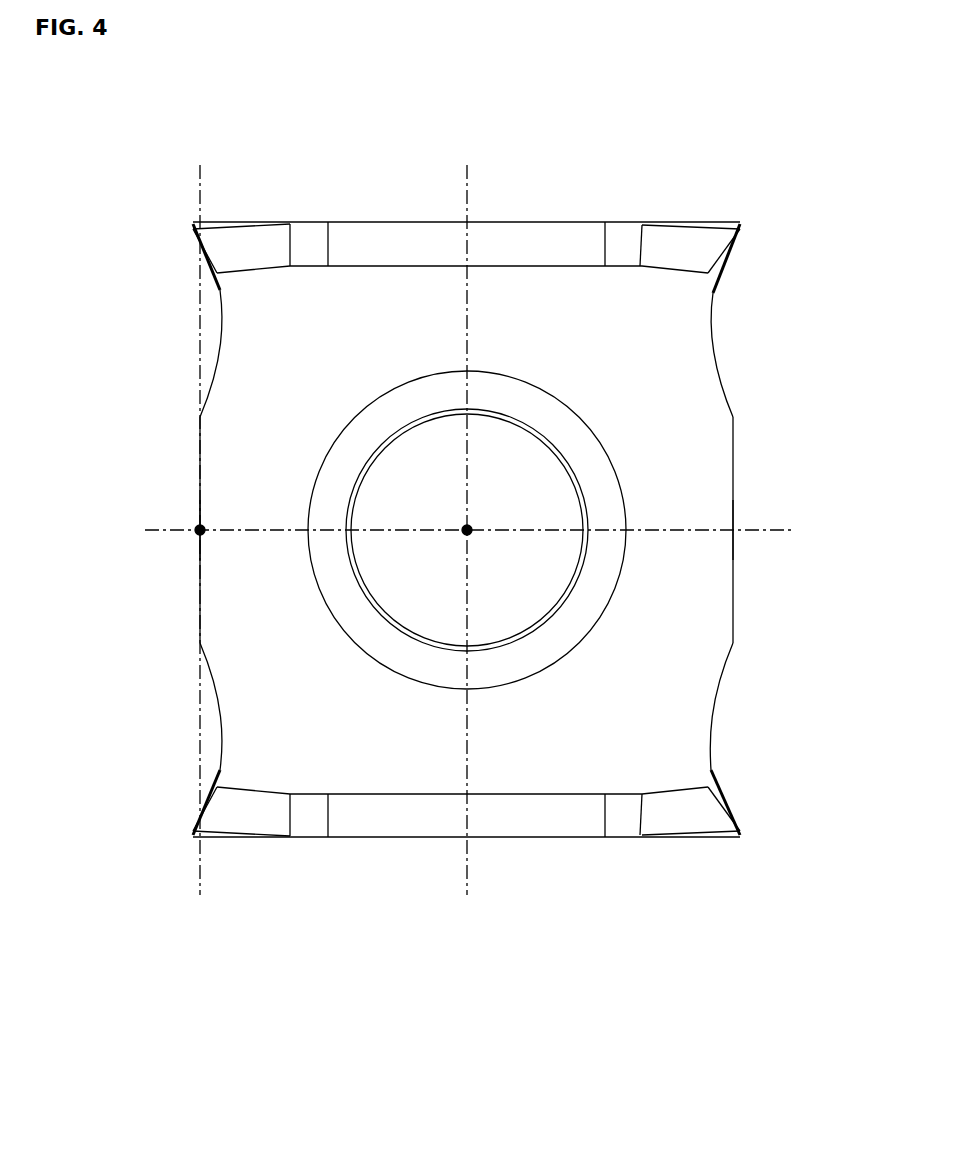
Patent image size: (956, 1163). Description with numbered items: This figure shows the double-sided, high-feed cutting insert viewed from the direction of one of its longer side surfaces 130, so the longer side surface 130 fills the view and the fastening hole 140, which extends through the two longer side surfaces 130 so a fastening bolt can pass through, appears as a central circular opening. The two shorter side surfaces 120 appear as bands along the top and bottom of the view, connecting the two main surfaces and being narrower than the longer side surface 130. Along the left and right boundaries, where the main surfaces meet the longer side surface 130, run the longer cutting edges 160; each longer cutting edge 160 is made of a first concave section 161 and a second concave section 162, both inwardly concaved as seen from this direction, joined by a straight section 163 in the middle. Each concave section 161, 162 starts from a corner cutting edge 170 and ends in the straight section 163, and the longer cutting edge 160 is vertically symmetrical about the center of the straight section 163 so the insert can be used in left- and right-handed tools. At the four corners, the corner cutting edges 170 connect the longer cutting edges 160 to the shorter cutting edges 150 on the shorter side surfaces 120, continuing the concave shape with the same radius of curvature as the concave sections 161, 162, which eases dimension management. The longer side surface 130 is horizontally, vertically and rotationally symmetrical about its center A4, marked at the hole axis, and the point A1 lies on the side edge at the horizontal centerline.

The shorter side surface 120 is at (540, 221).
The longer side surface 130 is at (263, 432).
The fastening hole 140 is at (497, 503).
The shorter cutting edge 150 is at (193, 225).
The longer cutting edge 160 is at (200, 592).
The first concave section 161 is at (220, 340).
The second concave section 162 is at (222, 713).
The straight section 163 is at (200, 565).
The corner cutting edge 170 is at (203, 258).
The reference point A1 is at (200, 530).
The center of the longer side surface A4 is at (467, 530).